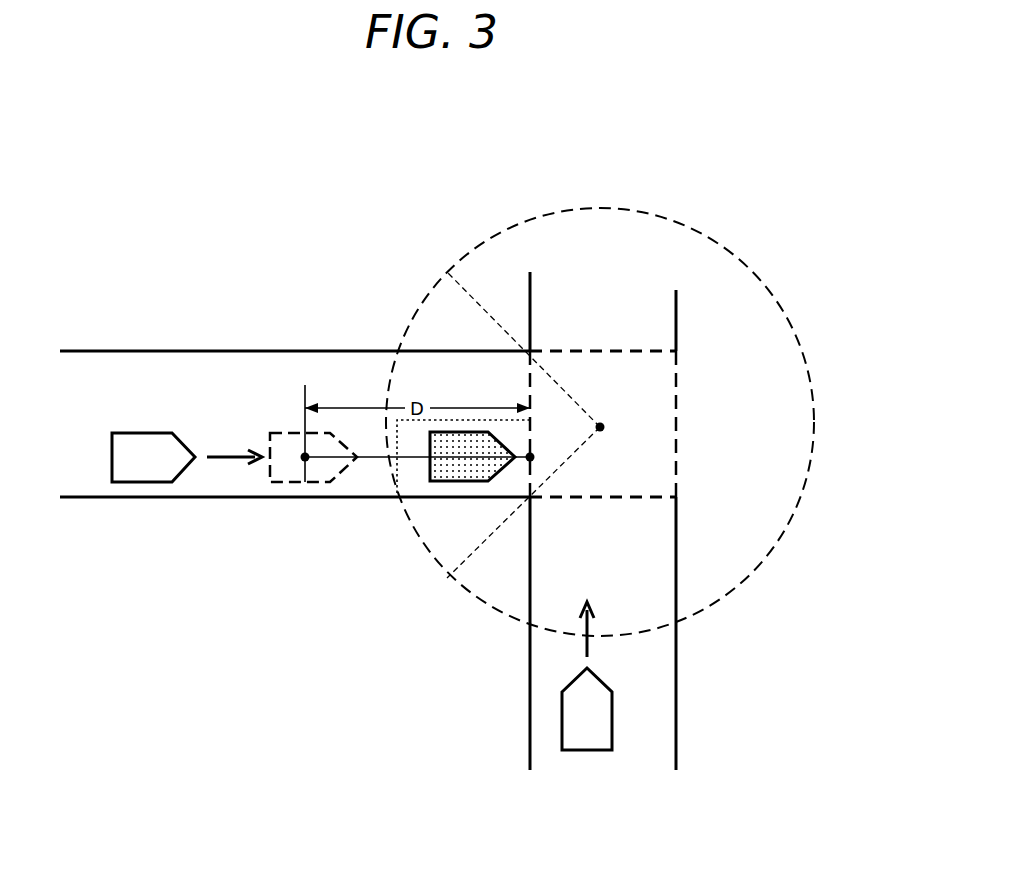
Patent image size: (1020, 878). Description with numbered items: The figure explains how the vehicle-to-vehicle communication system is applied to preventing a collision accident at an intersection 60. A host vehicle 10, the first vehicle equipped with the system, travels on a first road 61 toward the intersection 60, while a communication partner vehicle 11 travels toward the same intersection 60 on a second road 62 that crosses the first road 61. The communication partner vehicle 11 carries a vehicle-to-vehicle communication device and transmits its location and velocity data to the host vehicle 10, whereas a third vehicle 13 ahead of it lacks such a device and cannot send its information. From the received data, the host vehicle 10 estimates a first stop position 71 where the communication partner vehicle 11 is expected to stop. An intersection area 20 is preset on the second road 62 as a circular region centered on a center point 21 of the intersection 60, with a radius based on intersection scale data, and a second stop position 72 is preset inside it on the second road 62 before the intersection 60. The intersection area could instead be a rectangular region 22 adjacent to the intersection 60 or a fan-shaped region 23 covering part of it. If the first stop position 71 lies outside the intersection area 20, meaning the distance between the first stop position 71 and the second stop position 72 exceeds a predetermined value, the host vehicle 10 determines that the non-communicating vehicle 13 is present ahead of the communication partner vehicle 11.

The host vehicle 10 is at (600, 723).
The communication partner vehicle 11 is at (151, 481).
The third vehicle 13 is at (458, 482).
The intersection area 20 is at (608, 207).
The center point 21 is at (604, 427).
The rectangular region 22 is at (465, 420).
The fan-shaped region 23 is at (458, 272).
The intersection 60 is at (597, 348).
The first road 61 is at (658, 750).
The second road 62 is at (150, 377).
The first stop position 71 is at (305, 461).
The second stop position 72 is at (531, 460).